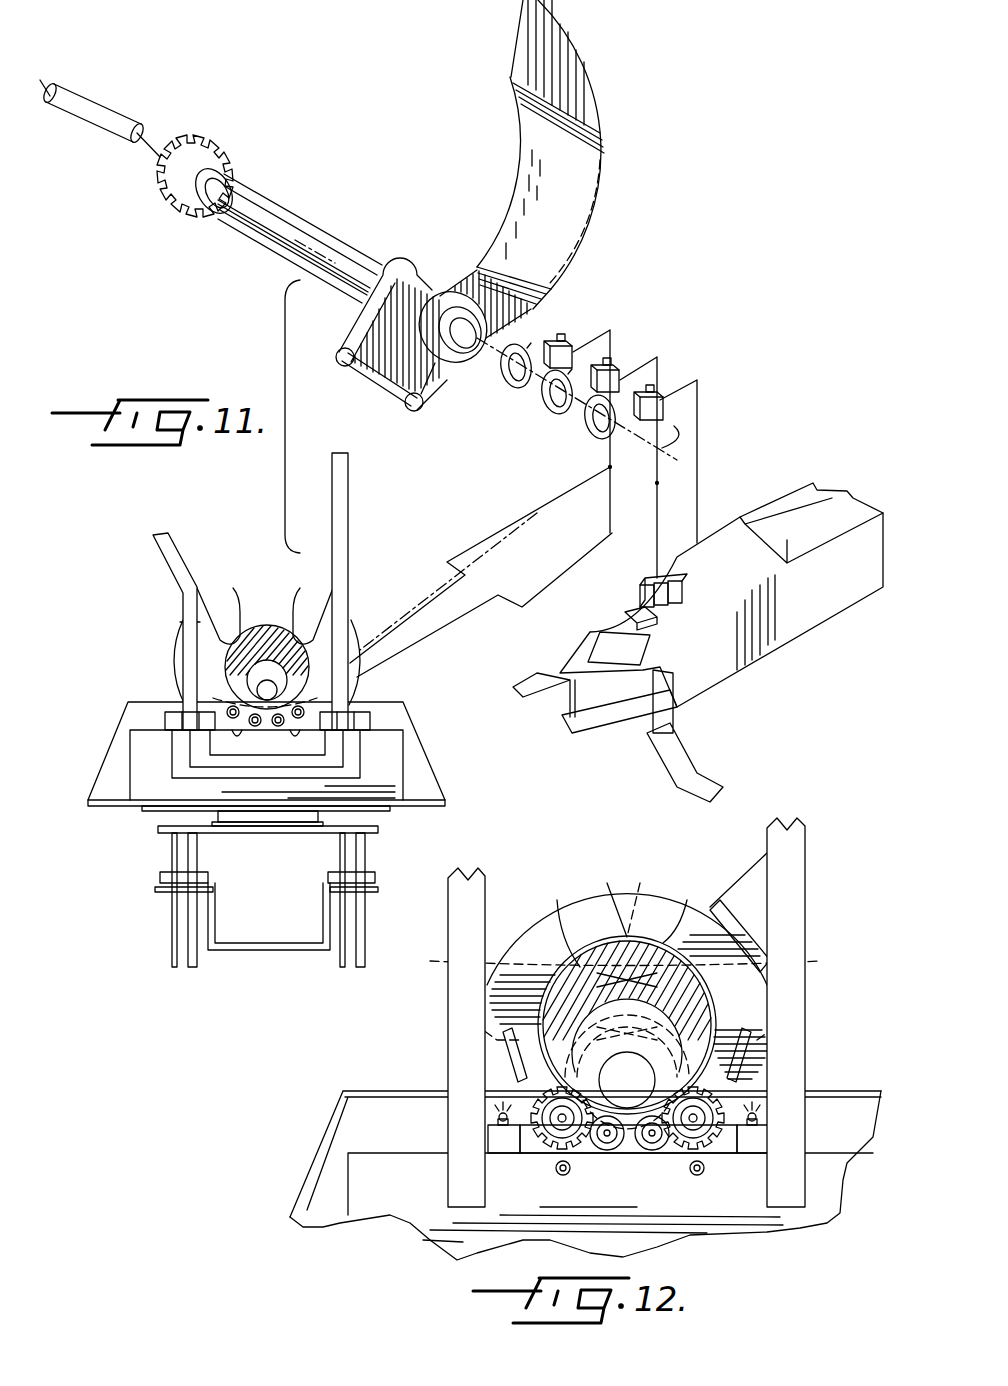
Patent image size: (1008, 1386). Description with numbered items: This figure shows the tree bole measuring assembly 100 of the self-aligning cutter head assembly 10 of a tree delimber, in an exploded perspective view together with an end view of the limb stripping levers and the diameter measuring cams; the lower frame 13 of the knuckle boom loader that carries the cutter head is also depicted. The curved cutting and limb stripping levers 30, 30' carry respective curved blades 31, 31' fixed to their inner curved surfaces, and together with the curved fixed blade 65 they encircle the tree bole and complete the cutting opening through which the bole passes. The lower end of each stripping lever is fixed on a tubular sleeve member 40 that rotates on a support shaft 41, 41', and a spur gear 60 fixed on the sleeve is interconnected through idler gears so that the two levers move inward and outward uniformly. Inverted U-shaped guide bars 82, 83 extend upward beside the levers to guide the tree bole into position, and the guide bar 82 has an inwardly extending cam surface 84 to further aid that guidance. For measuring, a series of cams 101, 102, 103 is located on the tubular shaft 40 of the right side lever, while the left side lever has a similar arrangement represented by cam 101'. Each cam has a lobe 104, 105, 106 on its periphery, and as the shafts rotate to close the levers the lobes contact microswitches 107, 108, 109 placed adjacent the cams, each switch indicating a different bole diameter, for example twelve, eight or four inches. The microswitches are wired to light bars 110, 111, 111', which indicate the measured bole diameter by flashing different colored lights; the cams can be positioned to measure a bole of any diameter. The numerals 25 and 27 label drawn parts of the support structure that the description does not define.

In FIG. 11, the self-aligning cutter head assembly 10 is at (120, 715).
In FIG. 12, the self-aligning cutter head assembly 10 is at (310, 1158).
In FIG. 11, the lower frame 13 is at (775, 650).
In FIG. 11, the base 25 is at (127, 803).
In FIG. 11, the platform 27 is at (130, 768).
In FIG. 12, the platform 27 is at (457, 1240).
In FIG. 11, the curved cutting and limb stripping lever 30 is at (430, 353).
In FIG. 12, the curved cutting and limb stripping lever 30 is at (670, 957).
In FIG. 11, the curved cutting and limb stripping lever 30' is at (151, 616).
In FIG. 12, the curved cutting and limb stripping lever 30' is at (603, 949).
In FIG. 11, the curved blade 31 is at (483, 359).
In FIG. 12, the curved blade 31 is at (694, 903).
In FIG. 11, the curved blade 31' is at (224, 603).
In FIG. 12, the curved blade 31' is at (543, 921).
In FIG. 11, the tubular sleeve member 40 is at (323, 233).
In FIG. 11, the support shaft 41 is at (118, 104).
In FIG. 12, the support shaft 41 is at (682, 1145).
In FIG. 12, the support shaft 41' is at (577, 1143).
In FIG. 11, the spur gear 60 is at (218, 140).
In FIG. 11, the curved fixed blade 65 is at (240, 673).
In FIG. 12, the curved fixed blade 65 is at (547, 1007).
In FIG. 11, the inverted U-shaped guide bar 82 is at (348, 510).
In FIG. 12, the inverted U-shaped guide bar 82 is at (805, 835).
In FIG. 11, the inverted U-shaped guide bar 83 is at (157, 552).
In FIG. 12, the inverted U-shaped guide bar 83 is at (460, 927).
In FIG. 12, the cam surface 84 is at (757, 897).
In FIG. 11, the tree bole measuring assembly 100 is at (622, 253).
In FIG. 11, the cam 101 is at (582, 438).
In FIG. 12, the cam 101 is at (730, 1179).
In FIG. 12, the cam 101' is at (536, 1179).
In FIG. 11, the cam 102 is at (547, 413).
In FIG. 11, the cam 103 is at (500, 378).
In FIG. 11, the lobe 104 is at (646, 451).
In FIG. 11, the lobe 105 is at (573, 410).
In FIG. 11, the lobe 106 is at (545, 385).
In FIG. 11, the microswitch 107 is at (648, 388).
In FIG. 11, the microswitch 108 is at (604, 360).
In FIG. 11, the microswitch 109 is at (547, 336).
In FIG. 11, the light bar 110 is at (640, 585).
In FIG. 11, the light bar 111 is at (406, 723).
In FIG. 12, the light bar 111 is at (806, 1127).
In FIG. 11, the light bar 111' is at (159, 701).
In FIG. 12, the light bar 111' is at (446, 1125).